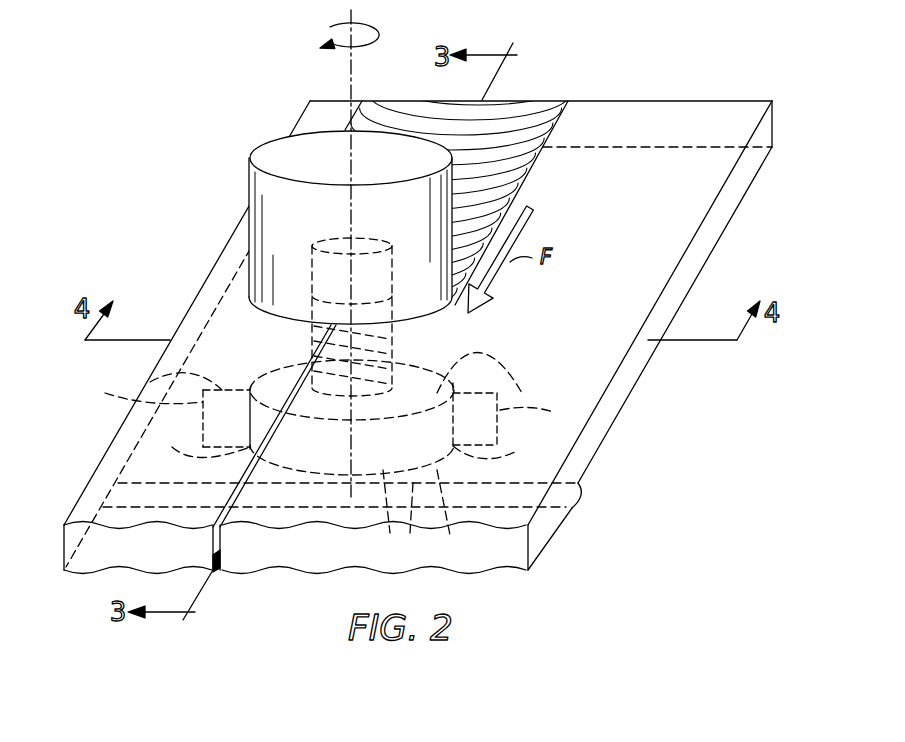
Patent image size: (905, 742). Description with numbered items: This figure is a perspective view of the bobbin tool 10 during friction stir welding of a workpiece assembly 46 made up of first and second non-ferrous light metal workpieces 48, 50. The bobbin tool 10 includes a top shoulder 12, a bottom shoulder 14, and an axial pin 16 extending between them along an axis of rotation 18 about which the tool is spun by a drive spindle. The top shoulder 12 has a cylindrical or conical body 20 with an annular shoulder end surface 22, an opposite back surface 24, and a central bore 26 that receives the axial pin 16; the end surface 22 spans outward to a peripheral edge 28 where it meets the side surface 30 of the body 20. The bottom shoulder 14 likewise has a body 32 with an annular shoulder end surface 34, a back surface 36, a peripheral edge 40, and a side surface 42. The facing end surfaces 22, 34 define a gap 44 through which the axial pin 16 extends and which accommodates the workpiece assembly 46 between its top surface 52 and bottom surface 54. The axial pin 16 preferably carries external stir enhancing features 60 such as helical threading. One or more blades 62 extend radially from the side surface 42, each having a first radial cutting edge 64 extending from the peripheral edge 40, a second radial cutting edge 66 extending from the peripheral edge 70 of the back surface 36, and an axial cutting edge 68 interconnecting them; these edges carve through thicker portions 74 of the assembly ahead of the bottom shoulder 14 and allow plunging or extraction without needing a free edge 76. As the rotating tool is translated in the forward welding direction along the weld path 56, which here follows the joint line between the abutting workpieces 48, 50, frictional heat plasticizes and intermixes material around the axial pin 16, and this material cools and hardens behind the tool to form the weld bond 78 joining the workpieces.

The bobbin tool 10 is at (236, 177).
The top shoulder 12 is at (258, 233).
The bottom shoulder 14 is at (440, 440).
The axial pin 16 is at (398, 362).
The axis of rotation 18 is at (356, 78).
The body 20 is at (254, 203).
The annular shoulder end surface 22 is at (440, 318).
The back surface 24 is at (288, 147).
The central bore 26 is at (311, 292).
The peripheral edge 28 is at (250, 303).
The side surface 30 is at (266, 231).
The body 32 is at (452, 535).
The annular shoulder end surface 34 is at (479, 360).
The back surface 36 is at (389, 533).
The peripheral edge 40 is at (487, 353).
The side surface 42 is at (508, 391).
The gap 44 is at (283, 328).
The workpiece assembly 46 is at (608, 402).
The first light metal workpiece 48 is at (122, 557).
The second light metal workpiece 50 is at (303, 553).
The top surface 52 is at (603, 363).
The bottom surface 54 is at (590, 463).
The weld path 56 is at (245, 476).
The external stir enhancing features 60 is at (405, 340).
The blade 62 is at (200, 425).
The first radial cutting edge 64 is at (150, 380).
The second radial cutting edge 66 is at (513, 466).
The axial cutting edge 68 is at (330, 400).
The peripheral edge 70 is at (412, 533).
The thicker portions 74 is at (573, 497).
The free edge 76 is at (636, 137).
The weld bond 78 is at (500, 174).